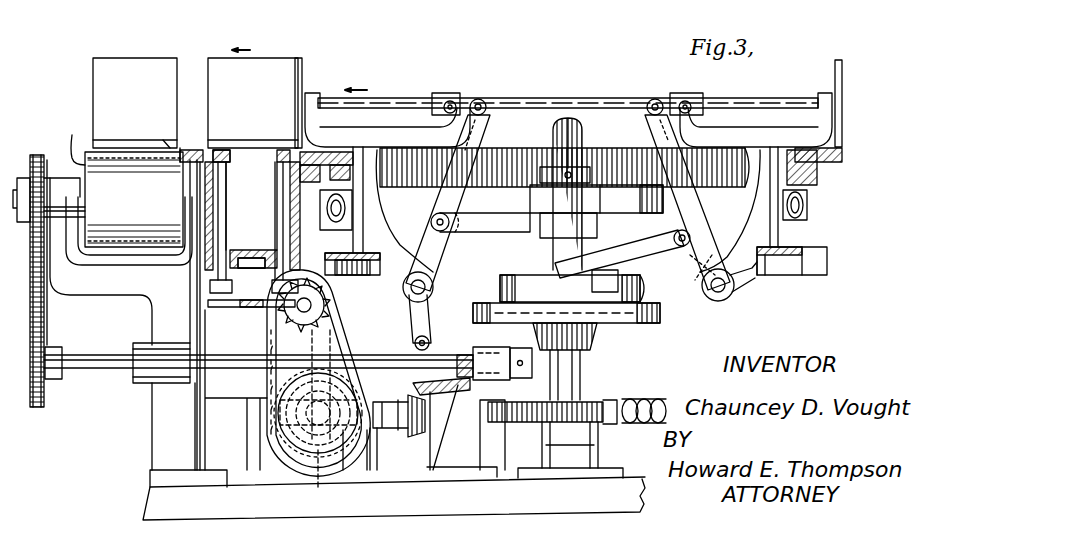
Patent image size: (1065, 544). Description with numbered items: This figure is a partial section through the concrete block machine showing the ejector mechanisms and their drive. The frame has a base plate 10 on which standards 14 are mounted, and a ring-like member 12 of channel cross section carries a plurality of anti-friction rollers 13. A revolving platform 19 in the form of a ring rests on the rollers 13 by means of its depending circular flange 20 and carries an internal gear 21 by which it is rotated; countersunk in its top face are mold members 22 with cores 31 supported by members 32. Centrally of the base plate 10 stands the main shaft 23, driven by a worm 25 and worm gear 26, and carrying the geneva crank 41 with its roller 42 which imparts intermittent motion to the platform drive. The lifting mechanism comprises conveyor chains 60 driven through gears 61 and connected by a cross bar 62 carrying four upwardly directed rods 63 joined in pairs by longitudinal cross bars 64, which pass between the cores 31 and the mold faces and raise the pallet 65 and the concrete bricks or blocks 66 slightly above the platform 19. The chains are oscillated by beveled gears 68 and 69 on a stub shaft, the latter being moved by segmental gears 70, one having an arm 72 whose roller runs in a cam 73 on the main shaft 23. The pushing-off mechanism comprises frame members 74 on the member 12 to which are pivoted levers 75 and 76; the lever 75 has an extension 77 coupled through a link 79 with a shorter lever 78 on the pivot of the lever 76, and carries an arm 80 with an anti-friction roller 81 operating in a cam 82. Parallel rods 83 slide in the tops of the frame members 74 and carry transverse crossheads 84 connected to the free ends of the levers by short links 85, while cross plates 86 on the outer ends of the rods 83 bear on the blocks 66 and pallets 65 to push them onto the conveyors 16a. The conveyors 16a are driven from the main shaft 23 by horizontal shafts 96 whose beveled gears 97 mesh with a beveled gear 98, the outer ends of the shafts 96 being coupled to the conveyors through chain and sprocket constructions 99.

The base plate 10 is at (196, 485).
The ring-like member 12 is at (355, 262).
The anti-friction rollers 13 is at (345, 205).
The standards 14 is at (150, 412).
The conveyors 16a is at (76, 131).
The revolving platform 19 is at (182, 170).
The depending circular flange 20 is at (818, 178).
The internal gear 21 is at (835, 148).
The mold members 22 is at (188, 266).
The main shaft 23 is at (565, 118).
The worm 25 is at (650, 400).
The worm gear 26 is at (520, 422).
The cores 31 is at (252, 172).
The core supporting members 32 is at (250, 258).
The geneva crank 41 is at (520, 278).
The roller 42 is at (608, 270).
The conveyor chains 60 is at (264, 383).
The gears 61 is at (335, 350).
The cross bar 62 is at (245, 307).
The rods 63 is at (275, 200).
The longitudinal cross bars 64 is at (270, 140).
The pallet 65 is at (212, 150).
The concrete bricks or blocks 66 is at (210, 62).
The beveled gears 68 is at (318, 420).
The beveled gears 69 is at (412, 438).
The segmental gears 70 is at (430, 360).
The arm 72 is at (565, 350).
The cam 73 is at (660, 320).
The frame members 74 is at (372, 140).
The lever 75 is at (483, 130).
The lever 76 is at (700, 203).
The extension 77 is at (430, 300).
The shorter lever 78 is at (693, 288).
The link 79 is at (652, 254).
The arm 80 is at (478, 222).
The anti-friction roller 81 is at (527, 165).
The cam 82 is at (596, 211).
The parallel rods 83 is at (330, 98).
The transverse crossheads 84 is at (437, 93).
The short links 85 is at (476, 98).
The cross plates 86 is at (302, 68).
The horizontal shafts 96 is at (95, 372).
The beveled gears 97 is at (582, 385).
The beveled gear 98 is at (605, 320).
The chain and sprocket constructions 99 is at (45, 322).